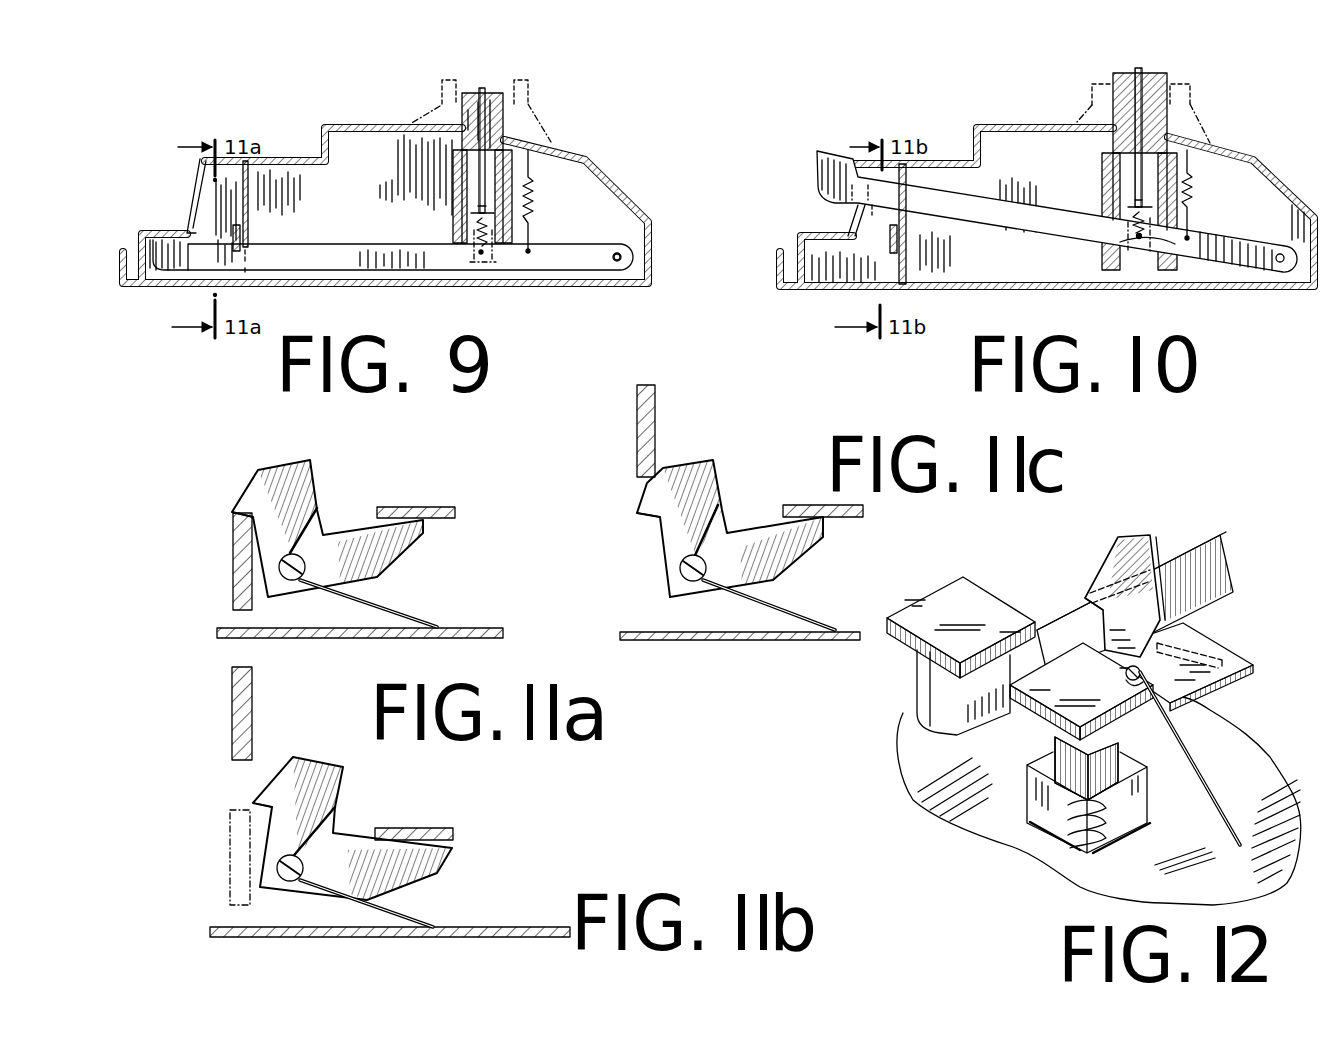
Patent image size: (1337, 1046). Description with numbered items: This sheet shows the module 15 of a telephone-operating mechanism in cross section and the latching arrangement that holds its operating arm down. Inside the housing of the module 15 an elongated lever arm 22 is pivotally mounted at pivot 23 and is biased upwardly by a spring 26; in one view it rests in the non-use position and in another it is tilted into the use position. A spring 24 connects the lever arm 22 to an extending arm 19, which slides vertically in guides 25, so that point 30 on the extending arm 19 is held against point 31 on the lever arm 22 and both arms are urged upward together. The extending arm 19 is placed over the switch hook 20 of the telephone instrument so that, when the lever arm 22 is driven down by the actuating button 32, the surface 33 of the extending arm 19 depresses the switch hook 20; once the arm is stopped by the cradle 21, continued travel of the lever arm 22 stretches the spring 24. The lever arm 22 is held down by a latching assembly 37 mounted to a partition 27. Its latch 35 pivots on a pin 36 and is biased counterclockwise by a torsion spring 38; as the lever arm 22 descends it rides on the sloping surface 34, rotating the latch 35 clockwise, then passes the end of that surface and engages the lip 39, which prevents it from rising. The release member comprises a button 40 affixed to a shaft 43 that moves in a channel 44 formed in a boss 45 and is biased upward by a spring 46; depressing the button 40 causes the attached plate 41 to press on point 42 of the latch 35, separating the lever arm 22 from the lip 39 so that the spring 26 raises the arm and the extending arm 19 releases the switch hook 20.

In FIG. 9, the module 15 is at (619, 184).
In FIG. 10, the module 15 is at (1289, 186).
In FIG. 11a, the module 15 is at (442, 640).
In FIG. 11b, the module 15 is at (432, 940).
In FIG. 11c, the module 15 is at (775, 642).
In FIG. 12, the module 15 is at (975, 806).
In FIG. 9, the extending arm 19 is at (487, 92).
In FIG. 10, the extending arm 19 is at (1158, 78).
In FIG. 9, the switch hook 20 is at (536, 104).
In FIG. 10, the switch hook 20 is at (1192, 99).
In FIG. 9, the cradle 21 is at (430, 90).
In FIG. 9, the elongated lever arm 22 is at (352, 250).
In FIG. 10, the elongated lever arm 22 is at (820, 186).
In FIG. 11a, the elongated lever arm 22 is at (232, 572).
In FIG. 11b, the elongated lever arm 22 is at (232, 712).
In FIG. 11c, the elongated lever arm 22 is at (656, 410).
In FIG. 12, the elongated lever arm 22 is at (1180, 548).
In FIG. 9, the pivot 23 is at (621, 248).
In FIG. 10, the pivot 23 is at (1270, 275).
In FIG. 9, the spring 24 is at (470, 252).
In FIG. 10, the spring 24 is at (1125, 238).
In FIG. 9, the guides 25 is at (460, 193).
In FIG. 10, the guides 25 is at (1101, 260).
In FIG. 9, the spring 26 is at (532, 212).
In FIG. 10, the spring 26 is at (1191, 196).
In FIG. 9, the partition 27 is at (250, 208).
In FIG. 10, the partition 27 is at (910, 266).
In FIG. 10, the contact point 30 is at (1152, 255).
In FIG. 9, the bearing point 31 is at (483, 255).
In FIG. 10, the bearing point 31 is at (1143, 240).
In FIG. 12, the actuating button 32 is at (947, 592).
In FIG. 9, the surface 33 is at (430, 103).
In FIG. 10, the surface 33 is at (1094, 80).
In FIG. 11a, the sloping surface 34 is at (252, 476).
In FIG. 11b, the sloping surface 34 is at (277, 778).
In FIG. 11c, the sloping surface 34 is at (648, 490).
In FIG. 12, the sloping surface 34 is at (1112, 549).
In FIG. 11a, the latch 35 is at (298, 468).
In FIG. 11b, the latch 35 is at (305, 770).
In FIG. 11c, the latch 35 is at (688, 468).
In FIG. 12, the latch 35 is at (1116, 617).
In FIG. 11a, the pin 36 is at (304, 563).
In FIG. 11b, the pin 36 is at (304, 866).
In FIG. 11c, the pin 36 is at (706, 562).
In FIG. 12, the pin 36 is at (1160, 690).
In FIG. 9, the latching assembly 37 is at (226, 228).
In FIG. 10, the latching assembly 37 is at (886, 230).
In FIG. 11a, the latching assembly 37 is at (331, 526).
In FIG. 11a, the torsion spring 38 is at (393, 612).
In FIG. 11b, the torsion spring 38 is at (417, 920).
In FIG. 11c, the torsion spring 38 is at (806, 614).
In FIG. 12, the torsion spring 38 is at (1200, 788).
In FIG. 11a, the lip 39 is at (232, 517).
In FIG. 11b, the lip 39 is at (253, 804).
In FIG. 11c, the lip 39 is at (650, 518).
In FIG. 12, the lip 39 is at (1090, 602).
In FIG. 12, the release button 40 is at (1074, 721).
In FIG. 12, the plate 41 is at (1222, 646).
In FIG. 11a, the point 42 is at (420, 514).
In FIG. 11b, the point 42 is at (440, 850).
In FIG. 11c, the point 42 is at (822, 514).
In FIG. 12, the point 42 is at (1236, 657).
In FIG. 12, the shaft 43 is at (1067, 762).
In FIG. 12, the channel 44 is at (1110, 847).
In FIG. 12, the boss 45 is at (1053, 822).
In FIG. 12, the spring 46 is at (1082, 857).